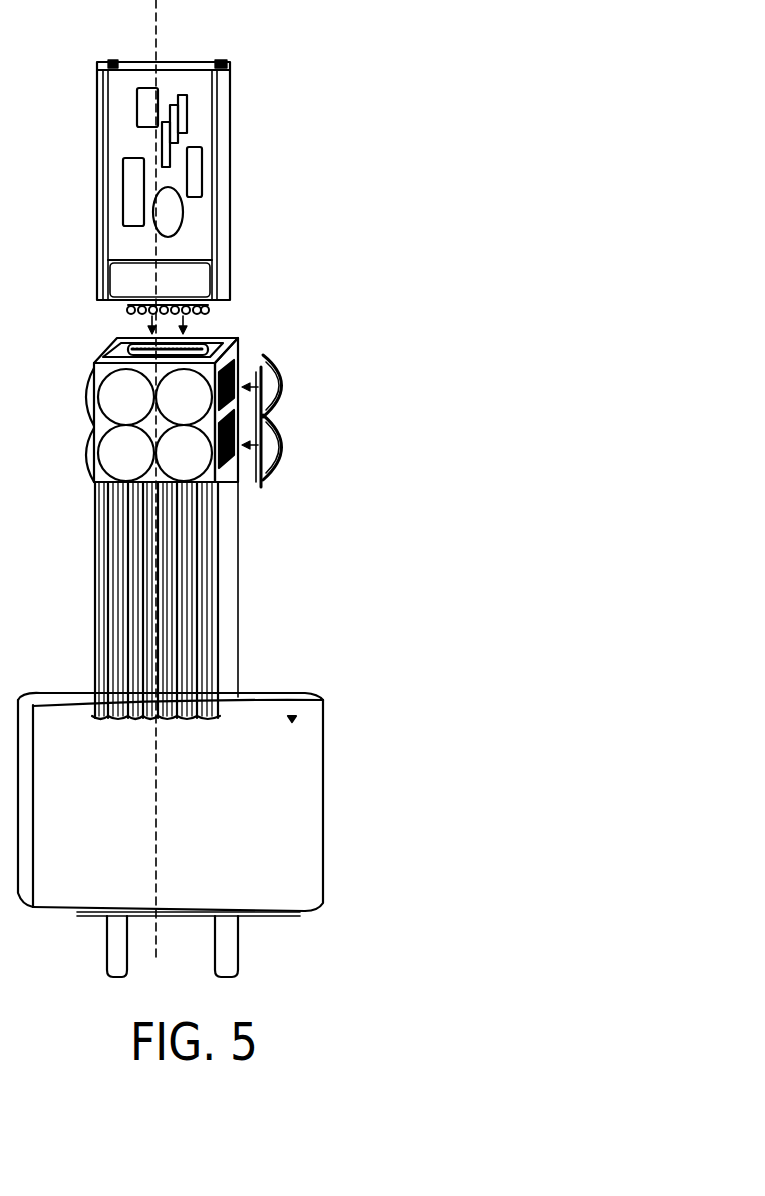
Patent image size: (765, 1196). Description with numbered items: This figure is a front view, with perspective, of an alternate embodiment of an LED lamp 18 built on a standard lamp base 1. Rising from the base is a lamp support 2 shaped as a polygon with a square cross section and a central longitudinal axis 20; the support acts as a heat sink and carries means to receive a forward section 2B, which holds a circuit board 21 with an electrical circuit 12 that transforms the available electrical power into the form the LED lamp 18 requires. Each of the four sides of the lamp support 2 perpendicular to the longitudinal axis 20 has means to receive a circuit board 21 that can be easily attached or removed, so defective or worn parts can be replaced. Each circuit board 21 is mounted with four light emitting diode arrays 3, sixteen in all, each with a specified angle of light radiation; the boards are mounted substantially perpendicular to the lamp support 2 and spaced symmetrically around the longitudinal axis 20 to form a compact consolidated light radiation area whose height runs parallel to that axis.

The forward section 2B is at (222, 62).
The electrical circuit 12 is at (190, 168).
The circuit board 21 is at (180, 250).
The light emitting diode array 3 is at (293, 438).
The central longitudinal axis 20 is at (157, 551).
The lamp support 2 is at (223, 638).
The LED lamp 18 is at (188, 747).
The standard lamp base 1 is at (198, 887).